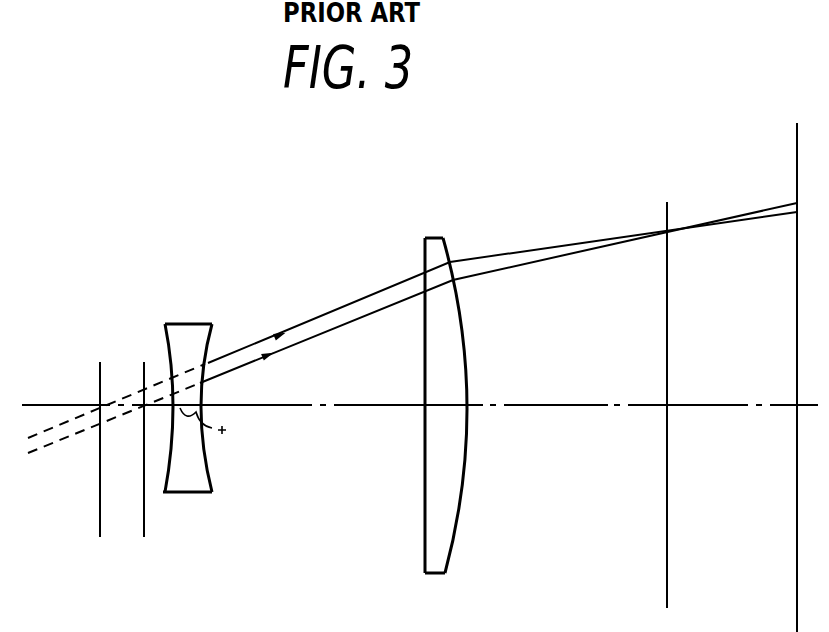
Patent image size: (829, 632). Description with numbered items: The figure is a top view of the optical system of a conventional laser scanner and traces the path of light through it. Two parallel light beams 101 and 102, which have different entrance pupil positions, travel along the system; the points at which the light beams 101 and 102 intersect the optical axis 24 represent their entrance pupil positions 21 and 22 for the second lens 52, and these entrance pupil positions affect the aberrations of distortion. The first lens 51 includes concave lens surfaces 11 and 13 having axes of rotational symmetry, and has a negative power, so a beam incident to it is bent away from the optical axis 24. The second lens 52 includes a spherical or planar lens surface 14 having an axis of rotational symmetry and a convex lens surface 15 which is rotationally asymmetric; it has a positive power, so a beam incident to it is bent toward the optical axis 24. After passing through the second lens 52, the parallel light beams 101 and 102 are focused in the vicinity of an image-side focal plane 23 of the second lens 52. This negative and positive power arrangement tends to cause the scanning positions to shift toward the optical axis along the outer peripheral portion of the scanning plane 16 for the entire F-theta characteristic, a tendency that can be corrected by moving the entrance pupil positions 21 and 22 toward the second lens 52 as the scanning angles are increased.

The concave lens surface 11 is at (168, 334).
The concave lens surface 13 is at (223, 387).
The first lens 51 is at (187, 362).
The spherical or planar lens surface 14 is at (424, 256).
The convex lens surface 15 is at (470, 383).
The second lens 52 is at (433, 359).
The entrance pupil position 21 is at (100, 537).
The entrance pupil position 22 is at (144, 537).
The image-side focal plane 23 is at (666, 592).
The scanning plane 16 is at (796, 594).
The optical axis 24 is at (260, 407).
The parallel light beam 101 is at (337, 308).
The parallel light beam 102 is at (332, 329).